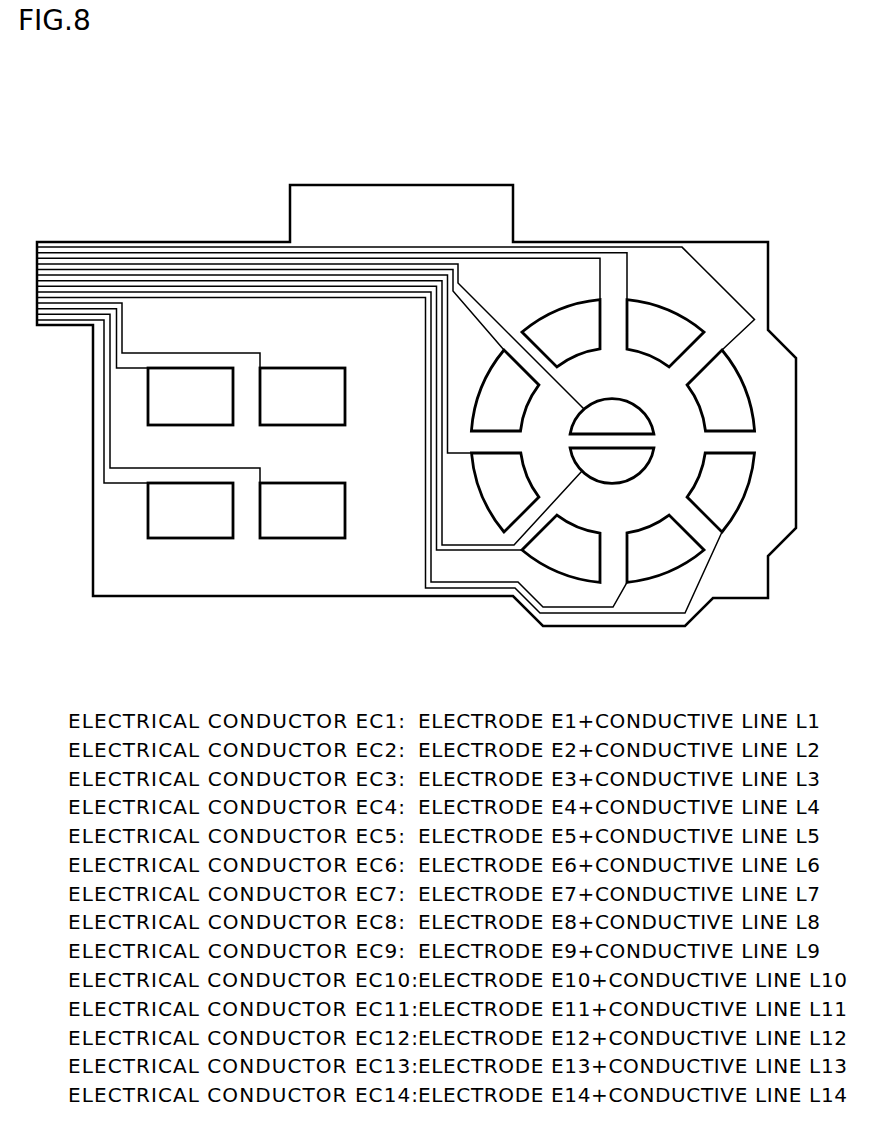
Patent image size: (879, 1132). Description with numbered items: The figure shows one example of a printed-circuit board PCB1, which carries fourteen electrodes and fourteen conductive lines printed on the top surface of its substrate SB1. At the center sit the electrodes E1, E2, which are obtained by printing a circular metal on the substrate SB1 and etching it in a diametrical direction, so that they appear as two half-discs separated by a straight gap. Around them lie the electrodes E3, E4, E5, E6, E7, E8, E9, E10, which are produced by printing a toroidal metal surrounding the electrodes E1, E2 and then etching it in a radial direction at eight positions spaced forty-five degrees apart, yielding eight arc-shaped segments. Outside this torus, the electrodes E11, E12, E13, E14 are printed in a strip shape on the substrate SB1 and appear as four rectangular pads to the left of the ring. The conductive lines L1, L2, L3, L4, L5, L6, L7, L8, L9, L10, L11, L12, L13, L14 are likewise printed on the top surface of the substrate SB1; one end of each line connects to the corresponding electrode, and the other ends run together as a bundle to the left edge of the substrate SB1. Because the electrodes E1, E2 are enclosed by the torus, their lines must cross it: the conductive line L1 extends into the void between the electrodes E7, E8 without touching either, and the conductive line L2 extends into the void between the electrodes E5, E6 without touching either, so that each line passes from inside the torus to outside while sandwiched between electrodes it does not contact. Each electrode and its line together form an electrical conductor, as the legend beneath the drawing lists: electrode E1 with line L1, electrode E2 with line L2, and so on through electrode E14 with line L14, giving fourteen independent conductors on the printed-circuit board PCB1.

The printed-circuit board PCB1 is at (191, 122).
The substrate SB1 is at (744, 598).
The electrode E1 is at (623, 408).
The electrode E2 is at (621, 478).
The electrode E3 is at (741, 491).
The electrode E4 is at (643, 577).
The electrode E5 is at (533, 555).
The electrode E6 is at (487, 497).
The electrode E7 is at (489, 392).
The electrode E8 is at (562, 322).
The electrode E9 is at (657, 313).
The electrode E10 is at (742, 392).
The electrode E11 is at (183, 426).
The electrode E12 is at (327, 381).
The electrode E13 is at (182, 536).
The electrode E14 is at (293, 536).
The conductive line L1 is at (578, 403).
The conductive line L2 is at (571, 490).
The conductive line L3 is at (697, 591).
The conductive line L4 is at (589, 608).
The conductive line L5 is at (436, 517).
The conductive line L6 is at (447, 441).
The conductive line L7 is at (481, 320).
The conductive line L8 is at (572, 258).
The conductive line L9 is at (616, 252).
The conductive line L10 is at (711, 279).
The conductive line L11 is at (137, 366).
The conductive line L12 is at (243, 352).
The conductive line L13 is at (130, 484).
The conductive line L14 is at (263, 472).